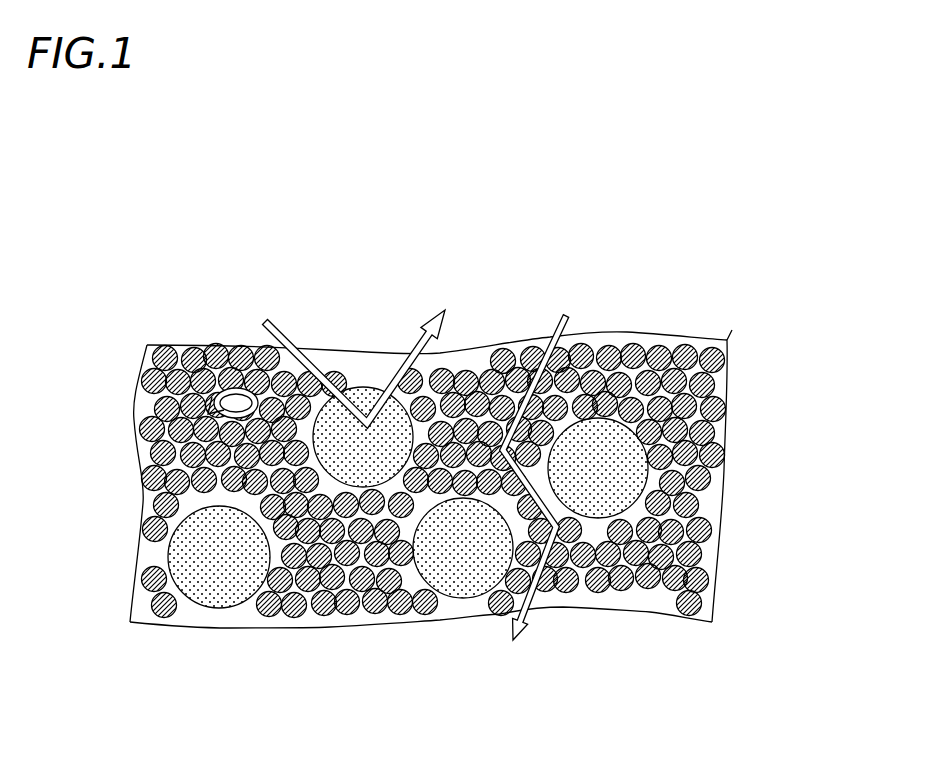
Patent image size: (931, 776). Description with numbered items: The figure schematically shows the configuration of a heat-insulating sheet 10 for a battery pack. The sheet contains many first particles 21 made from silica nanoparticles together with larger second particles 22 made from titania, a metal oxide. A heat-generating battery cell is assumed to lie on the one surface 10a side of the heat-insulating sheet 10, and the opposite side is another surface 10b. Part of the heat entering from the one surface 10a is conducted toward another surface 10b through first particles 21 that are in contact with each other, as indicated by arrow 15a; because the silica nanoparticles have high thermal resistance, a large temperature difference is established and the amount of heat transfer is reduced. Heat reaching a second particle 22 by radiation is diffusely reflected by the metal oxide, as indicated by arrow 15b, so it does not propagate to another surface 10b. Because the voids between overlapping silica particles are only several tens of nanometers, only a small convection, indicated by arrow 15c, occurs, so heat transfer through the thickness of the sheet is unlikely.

The heat-insulating sheet 10 is at (750, 306).
The one surface 10a is at (489, 347).
The another surface 10b is at (418, 626).
The arrow 15a is at (574, 321).
The arrow 15b is at (307, 345).
The arrow 15c is at (226, 372).
The first particle 21 is at (343, 617).
The second particle 22 is at (462, 565).